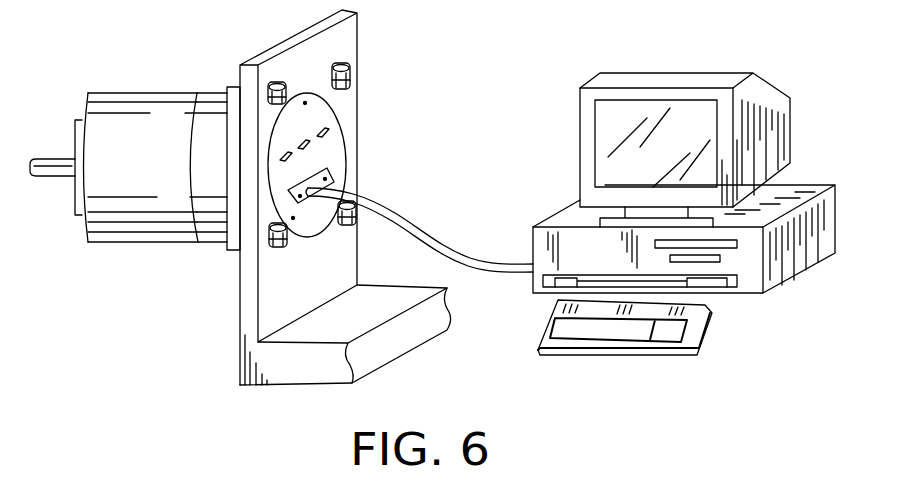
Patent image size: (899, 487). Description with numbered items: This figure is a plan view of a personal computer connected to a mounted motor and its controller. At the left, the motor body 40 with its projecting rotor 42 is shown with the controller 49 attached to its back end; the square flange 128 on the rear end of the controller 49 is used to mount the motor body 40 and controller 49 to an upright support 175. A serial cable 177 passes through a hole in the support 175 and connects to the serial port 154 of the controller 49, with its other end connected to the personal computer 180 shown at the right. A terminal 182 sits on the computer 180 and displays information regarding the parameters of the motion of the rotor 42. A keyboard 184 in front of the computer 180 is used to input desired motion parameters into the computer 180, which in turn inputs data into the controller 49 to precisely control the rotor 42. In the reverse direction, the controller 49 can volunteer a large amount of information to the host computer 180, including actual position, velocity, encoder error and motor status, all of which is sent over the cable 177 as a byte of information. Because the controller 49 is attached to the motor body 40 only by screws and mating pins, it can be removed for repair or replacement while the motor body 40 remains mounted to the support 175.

The motor body 40 is at (138, 243).
The rotor 42 is at (48, 177).
The controller 49 is at (207, 243).
The square flange 128 is at (237, 84).
The RS-232 port 154 is at (304, 203).
The support 175 is at (356, 50).
The RS-232 cable 177 is at (403, 216).
The personal computer 180 is at (560, 218).
The terminal 182 is at (655, 80).
The keyboard 184 is at (553, 319).